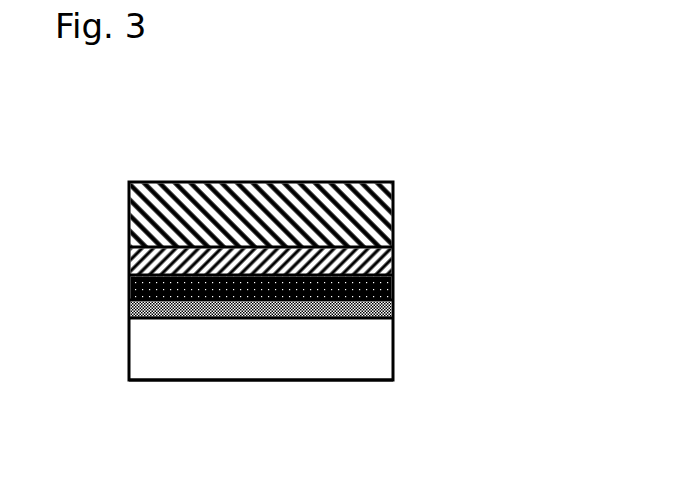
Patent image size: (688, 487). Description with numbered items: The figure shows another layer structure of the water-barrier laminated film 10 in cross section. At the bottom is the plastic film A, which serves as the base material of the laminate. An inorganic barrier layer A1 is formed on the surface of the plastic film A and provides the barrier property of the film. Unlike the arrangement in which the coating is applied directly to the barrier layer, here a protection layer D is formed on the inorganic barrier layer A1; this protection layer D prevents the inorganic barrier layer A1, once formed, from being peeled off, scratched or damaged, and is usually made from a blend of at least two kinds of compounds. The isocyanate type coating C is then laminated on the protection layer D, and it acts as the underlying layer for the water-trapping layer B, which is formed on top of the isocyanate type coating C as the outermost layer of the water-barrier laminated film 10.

The water-barrier laminated film 10 is at (392, 164).
The water-trapping layer B is at (373, 203).
The isocyanate type coating C is at (132, 258).
The protection layer D is at (132, 288).
The inorganic barrier layer A1 is at (390, 307).
The plastic film A is at (375, 360).